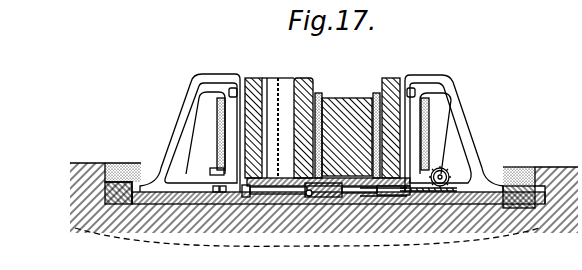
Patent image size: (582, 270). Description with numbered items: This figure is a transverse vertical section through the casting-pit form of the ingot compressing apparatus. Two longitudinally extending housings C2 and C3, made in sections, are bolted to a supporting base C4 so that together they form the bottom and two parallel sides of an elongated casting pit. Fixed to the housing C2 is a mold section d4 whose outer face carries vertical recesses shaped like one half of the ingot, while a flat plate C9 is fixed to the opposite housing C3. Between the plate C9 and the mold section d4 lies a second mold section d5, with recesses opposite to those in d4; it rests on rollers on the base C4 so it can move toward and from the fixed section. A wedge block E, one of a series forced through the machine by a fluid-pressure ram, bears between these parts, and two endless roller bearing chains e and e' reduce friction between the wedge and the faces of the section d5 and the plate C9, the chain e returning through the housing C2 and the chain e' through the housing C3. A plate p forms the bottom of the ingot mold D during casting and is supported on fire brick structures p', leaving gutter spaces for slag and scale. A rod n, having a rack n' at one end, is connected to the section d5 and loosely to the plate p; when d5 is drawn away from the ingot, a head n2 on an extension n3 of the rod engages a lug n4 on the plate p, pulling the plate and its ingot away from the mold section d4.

The housing C2 is at (198, 92).
The housing C3 is at (450, 96).
The supporting base C4 is at (446, 206).
The flat plate C9 is at (385, 82).
The mold section d4 is at (255, 79).
The mold section d5 is at (306, 80).
The drum D is at (278, 128).
The plate p is at (267, 128).
The fire brick structure p' is at (202, 184).
The roller bearing chain e is at (259, 128).
The roller bearing chain e' is at (400, 128).
The wedge block E is at (340, 100).
The rod n is at (330, 218).
The rack n' is at (436, 182).
The head n2 is at (247, 200).
The extension n3 is at (309, 197).
The lug n4 is at (300, 198).